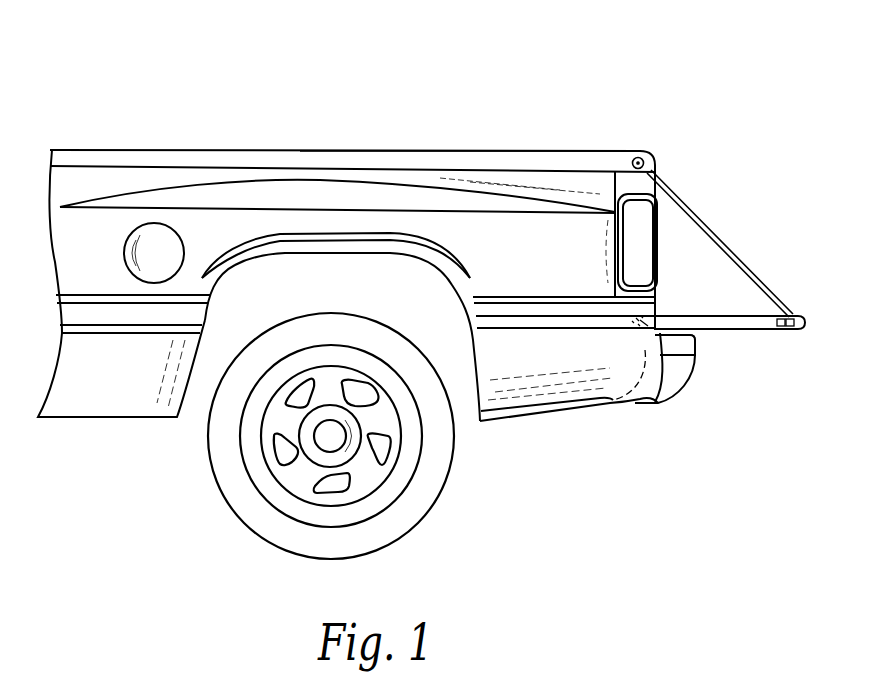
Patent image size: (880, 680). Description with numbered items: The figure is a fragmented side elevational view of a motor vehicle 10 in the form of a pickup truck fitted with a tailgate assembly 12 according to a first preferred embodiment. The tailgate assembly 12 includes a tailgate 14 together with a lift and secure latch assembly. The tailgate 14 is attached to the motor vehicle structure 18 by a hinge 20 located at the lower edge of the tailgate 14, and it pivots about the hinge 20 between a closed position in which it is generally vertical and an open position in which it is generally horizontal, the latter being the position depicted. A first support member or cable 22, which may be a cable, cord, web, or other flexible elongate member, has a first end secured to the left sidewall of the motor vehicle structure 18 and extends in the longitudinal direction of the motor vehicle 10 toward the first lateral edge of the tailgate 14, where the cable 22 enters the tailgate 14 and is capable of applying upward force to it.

The motor vehicle 10 is at (308, 58).
The tailgate assembly 12 is at (772, 329).
The tailgate 14 is at (722, 331).
The motor vehicle structure 18 is at (578, 150).
The hinge 20 is at (661, 358).
The first support member or cable 22 is at (738, 257).